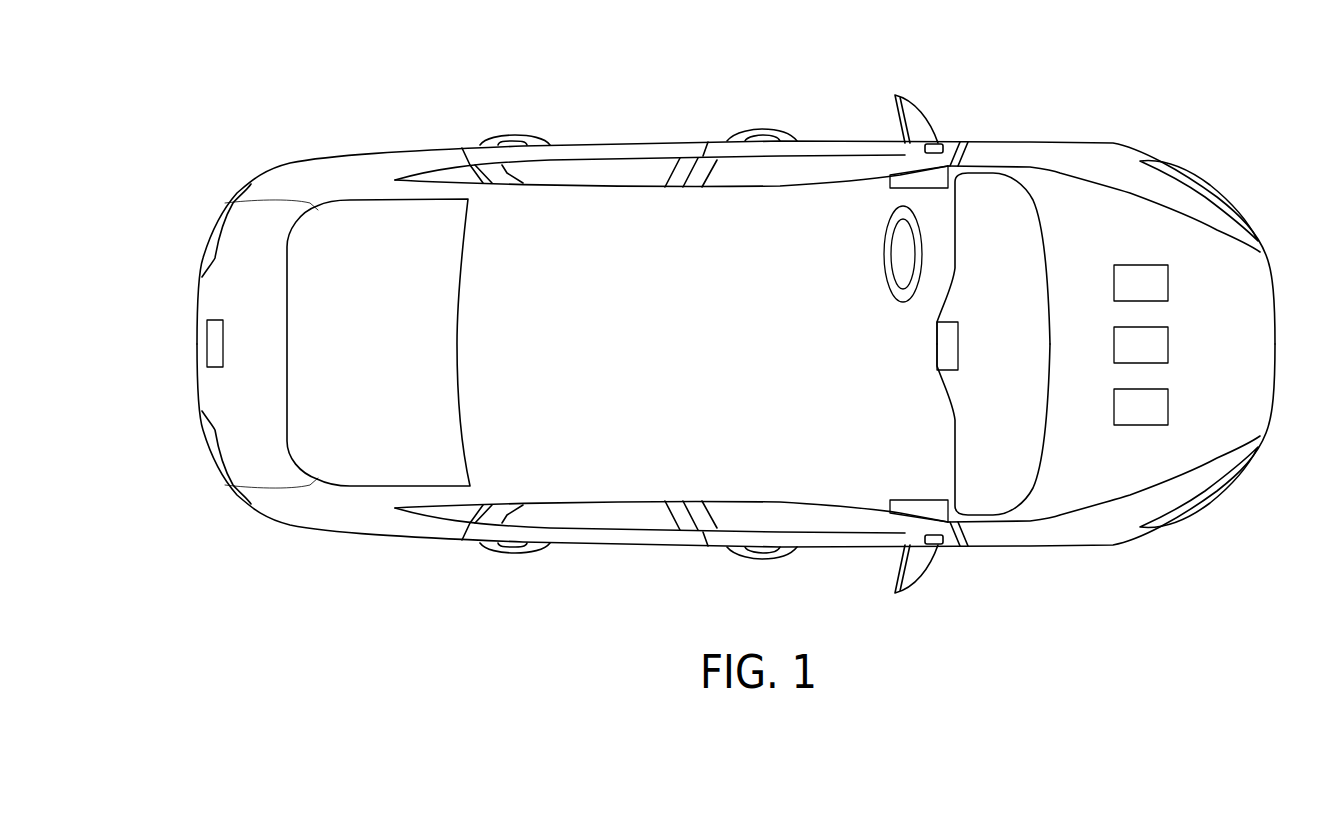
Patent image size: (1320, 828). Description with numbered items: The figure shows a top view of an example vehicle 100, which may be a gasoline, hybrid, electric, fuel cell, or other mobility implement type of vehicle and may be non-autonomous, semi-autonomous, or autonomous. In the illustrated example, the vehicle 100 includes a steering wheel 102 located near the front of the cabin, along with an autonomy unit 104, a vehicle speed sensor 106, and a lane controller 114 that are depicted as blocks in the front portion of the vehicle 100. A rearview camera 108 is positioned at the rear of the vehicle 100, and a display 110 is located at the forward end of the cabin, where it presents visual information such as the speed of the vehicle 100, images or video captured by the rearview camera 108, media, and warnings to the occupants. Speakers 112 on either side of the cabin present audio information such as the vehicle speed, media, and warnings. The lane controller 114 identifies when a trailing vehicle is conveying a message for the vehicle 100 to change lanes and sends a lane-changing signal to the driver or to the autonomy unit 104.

The vehicle 100 is at (1107, 80).
The steering wheel 102 is at (884, 252).
The autonomy unit 104 is at (1160, 294).
The vehicle speed sensor 106 is at (1160, 356).
The rearview camera 108 is at (207, 343).
The display 110 is at (937, 345).
The speakers 112 is at (890, 182).
The lane controller 114 is at (1160, 418).